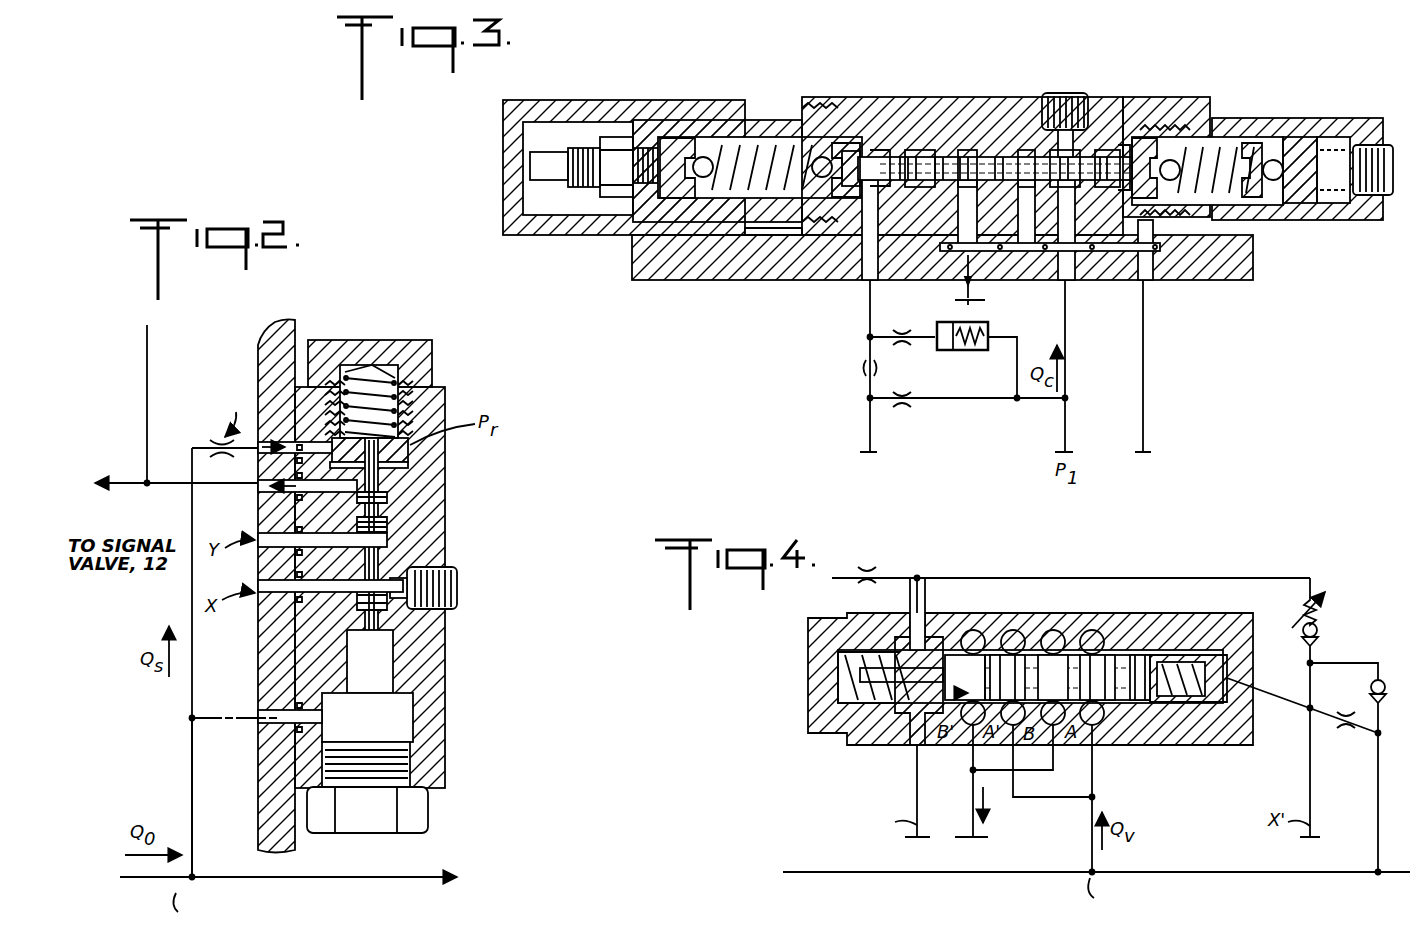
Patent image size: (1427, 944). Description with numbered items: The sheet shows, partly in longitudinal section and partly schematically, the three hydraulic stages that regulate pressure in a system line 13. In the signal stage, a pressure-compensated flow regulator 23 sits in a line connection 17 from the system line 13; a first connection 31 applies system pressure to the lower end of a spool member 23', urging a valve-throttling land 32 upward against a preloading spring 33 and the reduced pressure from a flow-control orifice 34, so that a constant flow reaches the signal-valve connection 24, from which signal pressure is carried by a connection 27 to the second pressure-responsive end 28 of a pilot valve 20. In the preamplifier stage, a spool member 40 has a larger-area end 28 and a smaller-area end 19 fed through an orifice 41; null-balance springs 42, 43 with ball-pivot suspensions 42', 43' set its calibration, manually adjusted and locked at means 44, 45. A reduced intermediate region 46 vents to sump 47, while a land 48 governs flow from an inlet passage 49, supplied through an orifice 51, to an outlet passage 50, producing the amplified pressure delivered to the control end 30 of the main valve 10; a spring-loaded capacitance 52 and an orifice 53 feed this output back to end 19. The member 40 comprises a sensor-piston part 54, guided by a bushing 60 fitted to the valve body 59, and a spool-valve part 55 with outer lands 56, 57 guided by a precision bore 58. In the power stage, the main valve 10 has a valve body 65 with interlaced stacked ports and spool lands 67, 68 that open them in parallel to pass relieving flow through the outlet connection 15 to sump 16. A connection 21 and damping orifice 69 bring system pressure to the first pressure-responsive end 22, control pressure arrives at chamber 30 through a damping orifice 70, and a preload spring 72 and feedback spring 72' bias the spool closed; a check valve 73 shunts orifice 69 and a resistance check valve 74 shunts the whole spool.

In FIG. 4, the main valve 10 is at (840, 742).
In FIG. 3, the system line 13 is at (868, 415).
In FIG. 2, the system line 13 is at (358, 880).
In FIG. 4, the system line 13 is at (972, 880).
In FIG. 4, the outlet connection 15 is at (972, 798).
In FIG. 4, the sump 16 is at (983, 840).
In FIG. 2, the line connection 17 is at (192, 782).
In FIG. 3, the first pressure-responsive end 19 is at (868, 260).
In FIG. 3, the pilot valve 20 is at (918, 80).
In FIG. 4, the connection 21 is at (1378, 790).
In FIG. 4, the first pressure-responsive end 22 is at (1148, 752).
In FIG. 2, the pressure-compensated flow regulator 23 is at (394, 568).
In FIG. 2, the spool member 23' is at (396, 677).
In FIG. 2, the signal-valve connection 24 is at (147, 485).
In FIG. 3, the connection 27 is at (1145, 408).
In FIG. 2, the connection 27 is at (147, 338).
In FIG. 3, the second pressure-responsive end 28 is at (1185, 130).
In FIG. 4, the control end 30 is at (925, 640).
In FIG. 2, the first connection 31 is at (222, 718).
In FIG. 2, the valve-throttling land 32 is at (380, 497).
In FIG. 2, the preloading spring 33 is at (395, 340).
In FIG. 2, the flow-control orifice 34 is at (222, 450).
In FIG. 3, the spool member 40 is at (1038, 100).
In FIG. 3, the orifice 41 is at (858, 368).
In FIG. 3, the null-balance spring 42 is at (1262, 183).
In FIG. 3, the ball-pivot suspension 42' is at (1224, 139).
In FIG. 3, the null-balance spring 43 is at (762, 121).
In FIG. 3, the ball-pivot suspension 43' is at (760, 125).
In FIG. 3, the adjusting means 44 is at (548, 120).
In FIG. 3, the locking means 45 is at (605, 135).
In FIG. 3, the reduced intermediate region 46 is at (975, 150).
In FIG. 3, the sump 47 is at (978, 302).
In FIG. 3, the land 48 is at (1115, 140).
In FIG. 3, the inlet passage 49 is at (1066, 258).
In FIG. 3, the outlet passage 50 is at (1025, 248).
In FIG. 3, the orifice 51 is at (900, 396).
In FIG. 3, the spring-loaded capacitance 52 is at (953, 350).
In FIG. 3, the orifice 53 is at (901, 328).
In FIG. 3, the sensor-piston part 54 is at (885, 140).
In FIG. 3, the spool-valve part 55 is at (1070, 150).
In FIG. 3, the outer land 56 is at (1025, 150).
In FIG. 3, the outer land 57 is at (1148, 140).
In FIG. 3, the precision bore 58 is at (1145, 262).
In FIG. 3, the valve body 59 is at (850, 150).
In FIG. 3, the bushing 60 is at (938, 150).
In FIG. 4, the valve body 65 is at (1080, 625).
In FIG. 4, the land 67 is at (1040, 665).
In FIG. 4, the land 68 is at (965, 677).
In FIG. 4, the damping orifice 69 is at (1346, 730).
In FIG. 4, the damping orifice 70 is at (866, 565).
In FIG. 4, the preload spring 72 is at (857, 677).
In FIG. 4, the feedback spring 72' is at (1176, 723).
In FIG. 4, the check valve 73 is at (1383, 680).
In FIG. 4, the resistance check valve 74 is at (1318, 632).